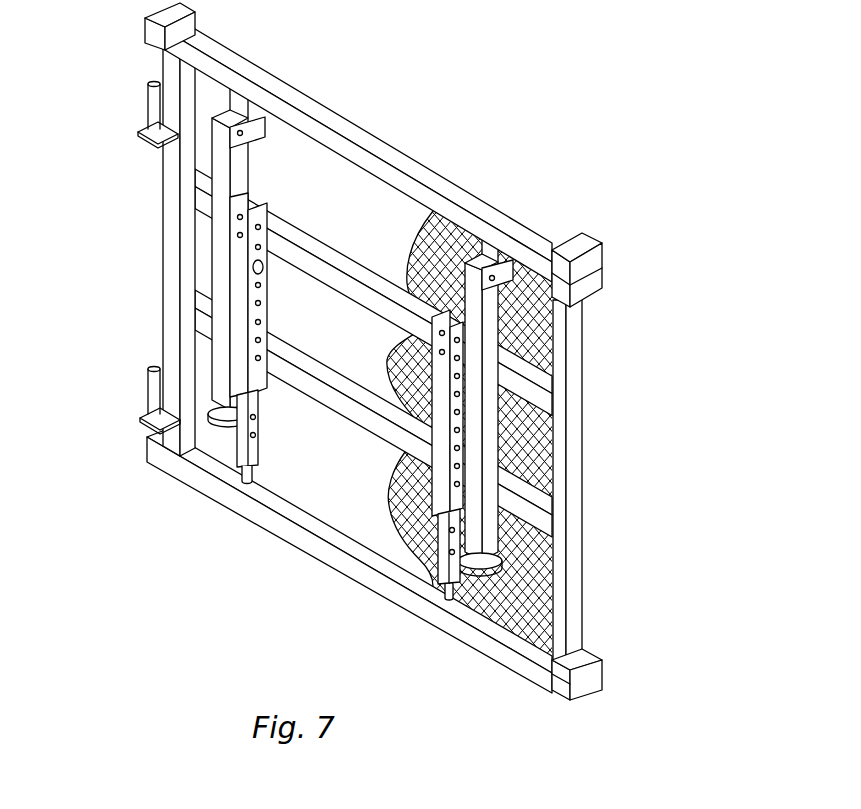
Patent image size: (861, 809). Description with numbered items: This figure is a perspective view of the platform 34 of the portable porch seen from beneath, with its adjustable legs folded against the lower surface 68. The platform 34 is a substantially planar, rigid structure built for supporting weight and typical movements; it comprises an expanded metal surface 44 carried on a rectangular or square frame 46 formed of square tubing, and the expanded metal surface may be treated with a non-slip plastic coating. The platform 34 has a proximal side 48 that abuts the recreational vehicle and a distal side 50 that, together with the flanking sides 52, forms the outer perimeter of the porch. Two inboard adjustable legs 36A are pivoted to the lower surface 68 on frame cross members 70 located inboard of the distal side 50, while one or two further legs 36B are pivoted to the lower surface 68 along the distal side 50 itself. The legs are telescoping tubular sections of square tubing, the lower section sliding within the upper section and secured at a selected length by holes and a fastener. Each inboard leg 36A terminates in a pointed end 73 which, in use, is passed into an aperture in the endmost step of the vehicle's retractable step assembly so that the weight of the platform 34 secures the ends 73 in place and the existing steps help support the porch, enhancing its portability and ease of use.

The platform 34 is at (376, 381).
The inboard adjustable legs 36A is at (272, 322).
The distal adjustable legs 36B is at (233, 188).
The expanded metal surface 44 is at (560, 483).
The frame 46 is at (373, 351).
The proximal side 48 is at (347, 565).
The distal side 50 is at (333, 110).
The flanking sides 52 is at (374, 349).
The lower surface 68 is at (515, 603).
The frame cross members 70 is at (302, 238).
The pointed end 73 is at (243, 476).